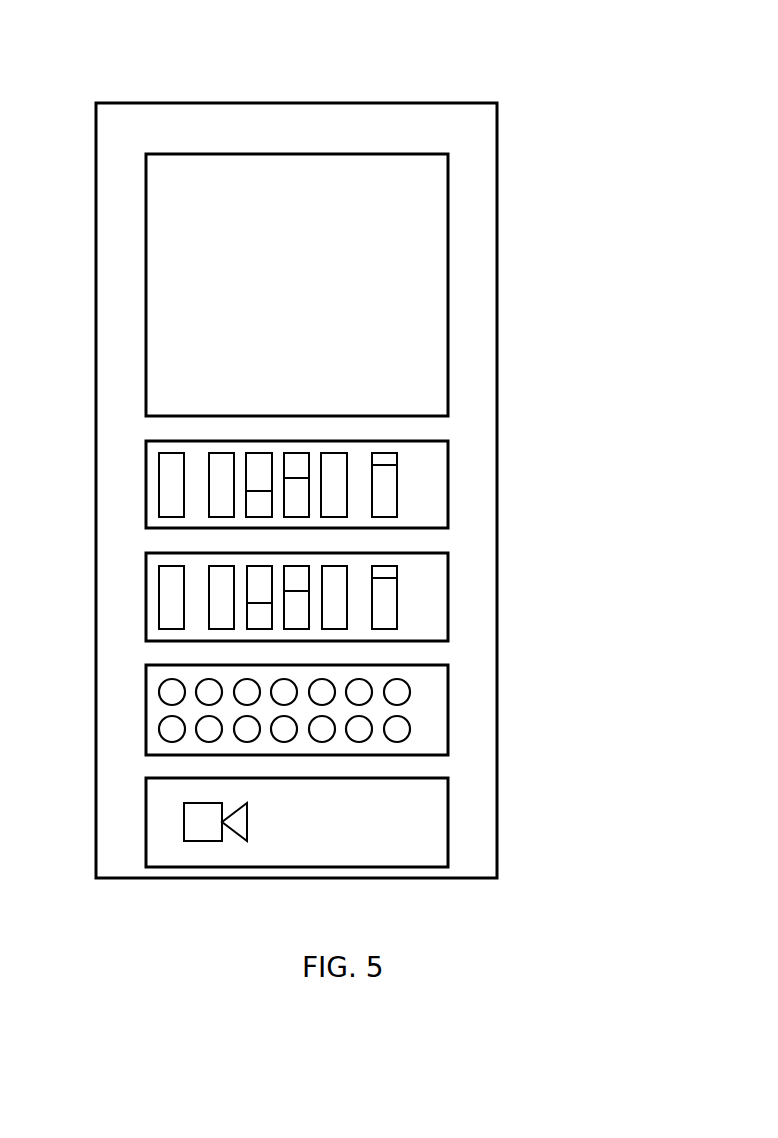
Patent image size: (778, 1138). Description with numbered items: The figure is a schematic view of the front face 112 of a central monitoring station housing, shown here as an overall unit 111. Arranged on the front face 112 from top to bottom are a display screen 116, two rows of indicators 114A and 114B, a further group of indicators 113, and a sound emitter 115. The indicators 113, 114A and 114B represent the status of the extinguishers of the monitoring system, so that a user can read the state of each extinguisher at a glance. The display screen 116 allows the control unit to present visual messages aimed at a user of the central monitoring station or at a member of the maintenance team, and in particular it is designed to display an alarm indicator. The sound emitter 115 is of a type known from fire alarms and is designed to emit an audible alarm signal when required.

The control unit / device 111 is at (128, 72).
The front face 112 is at (475, 115).
The indicators 113 is at (427, 693).
The indicators 114A is at (427, 457).
The indicators 114B is at (428, 576).
The sound emitter 115 is at (427, 812).
The display screen 116 is at (427, 352).